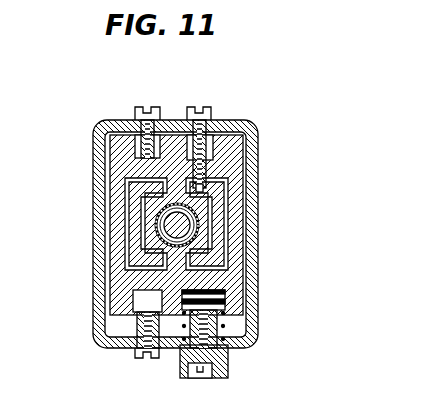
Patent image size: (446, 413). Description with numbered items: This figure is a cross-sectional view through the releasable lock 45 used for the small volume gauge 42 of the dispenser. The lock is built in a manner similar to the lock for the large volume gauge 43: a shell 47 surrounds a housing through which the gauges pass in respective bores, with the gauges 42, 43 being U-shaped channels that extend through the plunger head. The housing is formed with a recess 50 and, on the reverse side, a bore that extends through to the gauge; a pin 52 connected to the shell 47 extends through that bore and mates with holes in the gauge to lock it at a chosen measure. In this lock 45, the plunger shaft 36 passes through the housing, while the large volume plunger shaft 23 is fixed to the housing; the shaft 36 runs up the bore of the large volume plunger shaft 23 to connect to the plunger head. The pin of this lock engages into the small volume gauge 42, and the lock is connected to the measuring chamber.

The pin 52 is at (213, 134).
The large volume gauge 43 is at (130, 220).
The small volume gauge 42 is at (222, 200).
The plunger shaft 36 is at (200, 218).
The large volume plunger shaft 23 is at (197, 229).
The shell 47 is at (254, 278).
The recess 50 is at (187, 322).
The releasable lock 45 is at (190, 225).